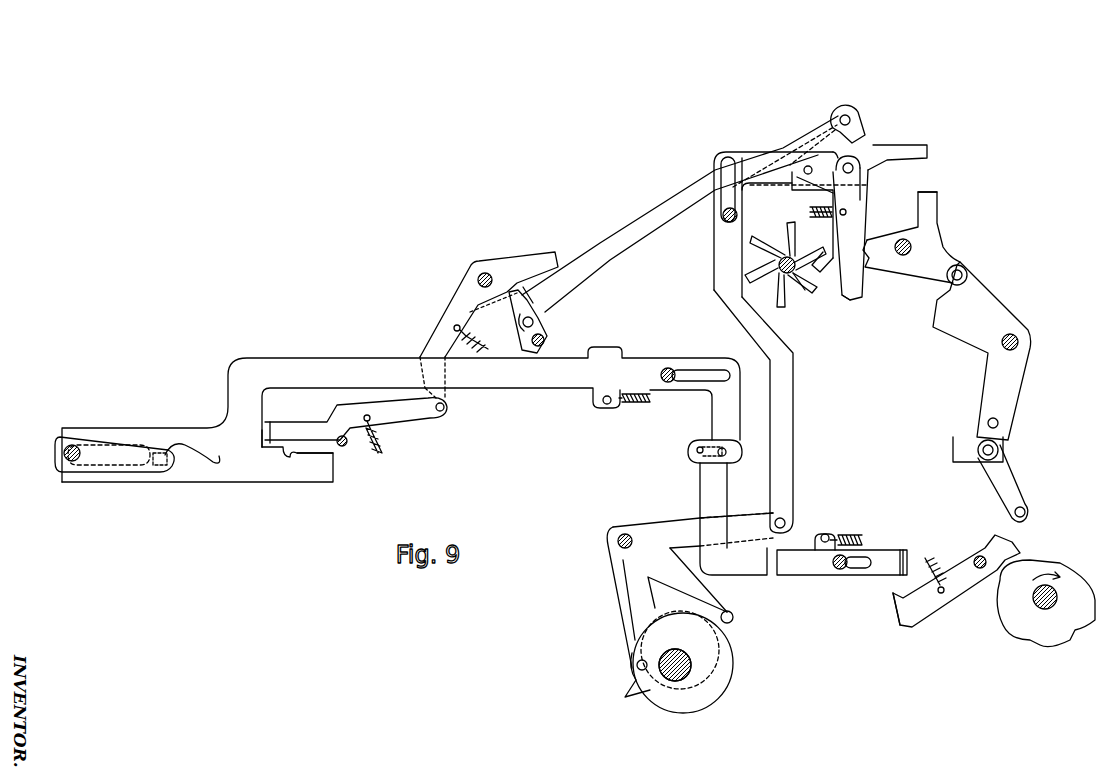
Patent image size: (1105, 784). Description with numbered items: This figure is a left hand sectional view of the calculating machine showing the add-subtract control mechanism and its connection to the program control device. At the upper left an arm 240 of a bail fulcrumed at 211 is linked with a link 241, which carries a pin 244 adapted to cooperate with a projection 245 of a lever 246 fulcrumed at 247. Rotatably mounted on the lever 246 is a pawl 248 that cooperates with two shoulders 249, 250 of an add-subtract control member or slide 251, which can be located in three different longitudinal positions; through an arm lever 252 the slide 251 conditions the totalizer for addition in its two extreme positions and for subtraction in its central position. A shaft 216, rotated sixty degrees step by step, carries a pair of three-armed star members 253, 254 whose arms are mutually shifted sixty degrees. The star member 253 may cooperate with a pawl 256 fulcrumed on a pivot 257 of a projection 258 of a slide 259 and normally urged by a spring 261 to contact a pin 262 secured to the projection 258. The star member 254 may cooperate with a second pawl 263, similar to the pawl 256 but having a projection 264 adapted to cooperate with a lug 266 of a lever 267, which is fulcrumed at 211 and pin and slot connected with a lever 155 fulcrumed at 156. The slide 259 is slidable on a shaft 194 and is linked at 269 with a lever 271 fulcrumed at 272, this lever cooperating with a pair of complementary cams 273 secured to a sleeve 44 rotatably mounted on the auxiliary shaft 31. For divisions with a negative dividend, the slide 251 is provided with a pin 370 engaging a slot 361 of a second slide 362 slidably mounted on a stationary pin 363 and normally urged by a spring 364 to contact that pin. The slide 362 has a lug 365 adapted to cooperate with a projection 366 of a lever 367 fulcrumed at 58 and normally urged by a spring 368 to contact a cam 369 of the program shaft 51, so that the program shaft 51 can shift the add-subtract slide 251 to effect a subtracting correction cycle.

The shaft 31 is at (688, 672).
The sleeve 44 is at (695, 667).
The program shaft 51 is at (1044, 610).
The fulcrum 58 is at (980, 555).
The lever 155 is at (990, 302).
The fulcrum 156 is at (1002, 346).
The shaft 194 is at (723, 225).
The fulcrum 211 is at (903, 256).
The shaft 216 is at (787, 262).
The arm 240 is at (845, 158).
The link 241 is at (648, 230).
The pin 244 is at (536, 322).
The projection 245 is at (520, 348).
The lever 246 is at (445, 327).
The fulcrum 247 is at (486, 274).
The pawl 248 is at (420, 422).
The shoulder 249 is at (260, 452).
The shoulder 250 is at (286, 456).
The add-subtract control slide 251 is at (347, 360).
The arm lever 252 is at (150, 470).
The star member 253 is at (800, 286).
The star member 254 is at (828, 256).
The pawl 256 is at (860, 216).
The pivot 257 is at (861, 170).
The projection 258 is at (830, 130).
The slide 259 is at (728, 293).
The spring 261 is at (800, 208).
The pin 262 is at (808, 165).
The pawl 263 is at (850, 298).
The projection 264 is at (915, 150).
The lug 266 is at (937, 197).
The lever 267 is at (928, 233).
The link connection 269 is at (786, 523).
The lever 271 is at (668, 535).
The fulcrum 272 is at (618, 542).
The complementary cams 273 is at (660, 699).
The slot 361 is at (699, 447).
The second slide 362 is at (780, 577).
The stationary pin 363 is at (840, 570).
The spring 364 is at (855, 534).
The lug 365 is at (907, 552).
The projection 366 is at (897, 612).
The lever 367 is at (960, 587).
The spring 368 is at (936, 573).
The cam 369 is at (1010, 620).
The pin 370 is at (726, 458).